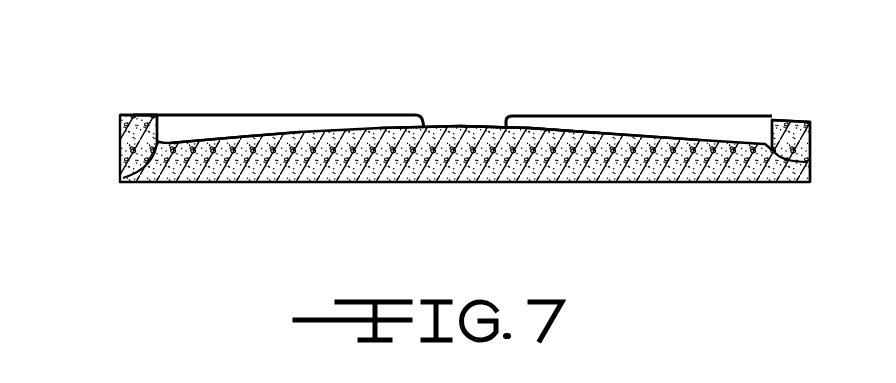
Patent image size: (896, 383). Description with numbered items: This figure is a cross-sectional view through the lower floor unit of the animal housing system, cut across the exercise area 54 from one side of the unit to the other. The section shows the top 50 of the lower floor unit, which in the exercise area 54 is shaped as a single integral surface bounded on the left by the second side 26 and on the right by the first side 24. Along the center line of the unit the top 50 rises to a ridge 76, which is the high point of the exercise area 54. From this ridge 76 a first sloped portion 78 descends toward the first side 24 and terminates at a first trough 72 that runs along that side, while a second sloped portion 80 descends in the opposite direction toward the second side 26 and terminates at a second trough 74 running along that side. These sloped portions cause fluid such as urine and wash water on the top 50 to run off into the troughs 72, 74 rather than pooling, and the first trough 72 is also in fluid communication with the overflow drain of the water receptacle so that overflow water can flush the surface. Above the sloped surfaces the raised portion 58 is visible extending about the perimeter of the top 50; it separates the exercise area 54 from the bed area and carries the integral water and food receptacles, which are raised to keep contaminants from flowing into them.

The first side 24 is at (800, 124).
The second side 26 is at (133, 114).
The top 50 is at (530, 130).
The exercise area 54 is at (316, 130).
The raised portion 58 is at (717, 115).
The first trough 72 is at (808, 162).
The second trough 74 is at (121, 167).
The ridge 76 is at (463, 128).
The first sloped portion 78 is at (592, 133).
The second sloped portion 80 is at (248, 135).